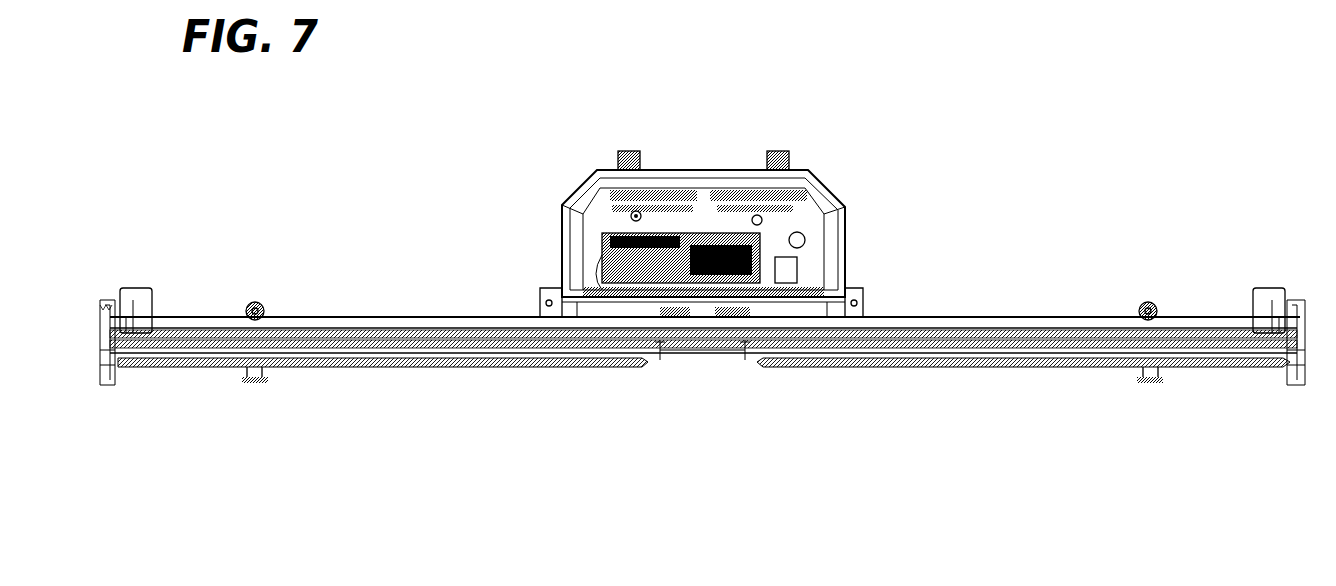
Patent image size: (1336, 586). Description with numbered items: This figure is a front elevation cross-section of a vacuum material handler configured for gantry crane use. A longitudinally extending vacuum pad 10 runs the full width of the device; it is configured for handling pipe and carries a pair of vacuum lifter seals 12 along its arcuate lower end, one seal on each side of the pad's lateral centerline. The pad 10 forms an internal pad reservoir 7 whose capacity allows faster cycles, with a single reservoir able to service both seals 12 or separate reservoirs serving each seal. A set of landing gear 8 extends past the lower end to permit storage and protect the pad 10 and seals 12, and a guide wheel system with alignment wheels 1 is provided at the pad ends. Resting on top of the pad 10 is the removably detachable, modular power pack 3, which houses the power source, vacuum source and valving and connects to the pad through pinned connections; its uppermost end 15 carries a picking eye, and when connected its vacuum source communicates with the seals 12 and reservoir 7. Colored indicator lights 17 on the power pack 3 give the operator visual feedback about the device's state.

The alignment wheels 1 is at (1300, 350).
The power pack 3 is at (837, 193).
The internal pad reservoir 7 is at (1028, 325).
The landing gear 8 is at (248, 380).
The vacuum pad 10 is at (438, 317).
The lifter seals 12 is at (437, 367).
The uppermost end 15 is at (700, 170).
The indicator lights 17 is at (618, 153).